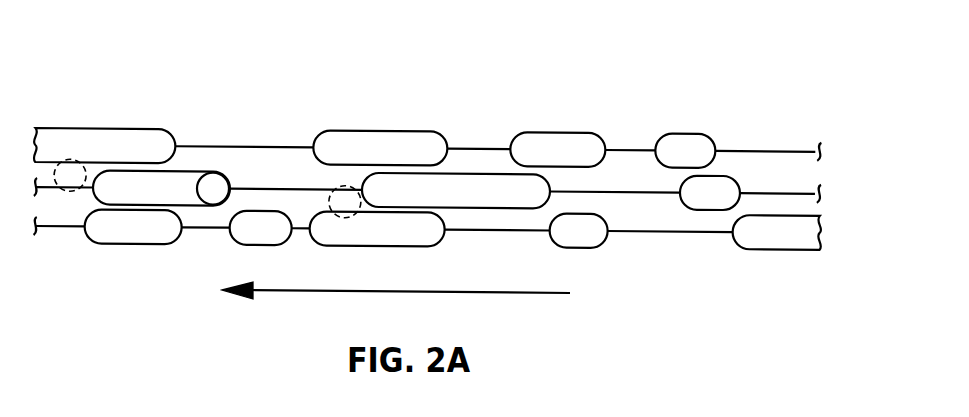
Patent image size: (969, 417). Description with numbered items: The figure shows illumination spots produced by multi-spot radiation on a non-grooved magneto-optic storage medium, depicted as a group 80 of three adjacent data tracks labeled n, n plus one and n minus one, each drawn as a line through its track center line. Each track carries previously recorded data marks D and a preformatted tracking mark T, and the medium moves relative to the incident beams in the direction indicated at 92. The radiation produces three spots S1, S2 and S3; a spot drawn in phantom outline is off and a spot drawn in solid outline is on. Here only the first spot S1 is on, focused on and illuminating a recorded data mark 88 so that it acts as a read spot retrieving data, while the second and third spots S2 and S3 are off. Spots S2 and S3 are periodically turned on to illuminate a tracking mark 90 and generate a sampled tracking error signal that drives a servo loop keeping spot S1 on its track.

The group of adjacent data tracks 80 is at (104, 61).
The recorded data mark 88 is at (172, 168).
The tracking mark 90 is at (490, 170).
The direction of medium movement 92 is at (513, 296).
The first illumination spot S1 is at (213, 188).
The second illumination spot S2 is at (345, 202).
The third illumination spot S3 is at (70, 175).